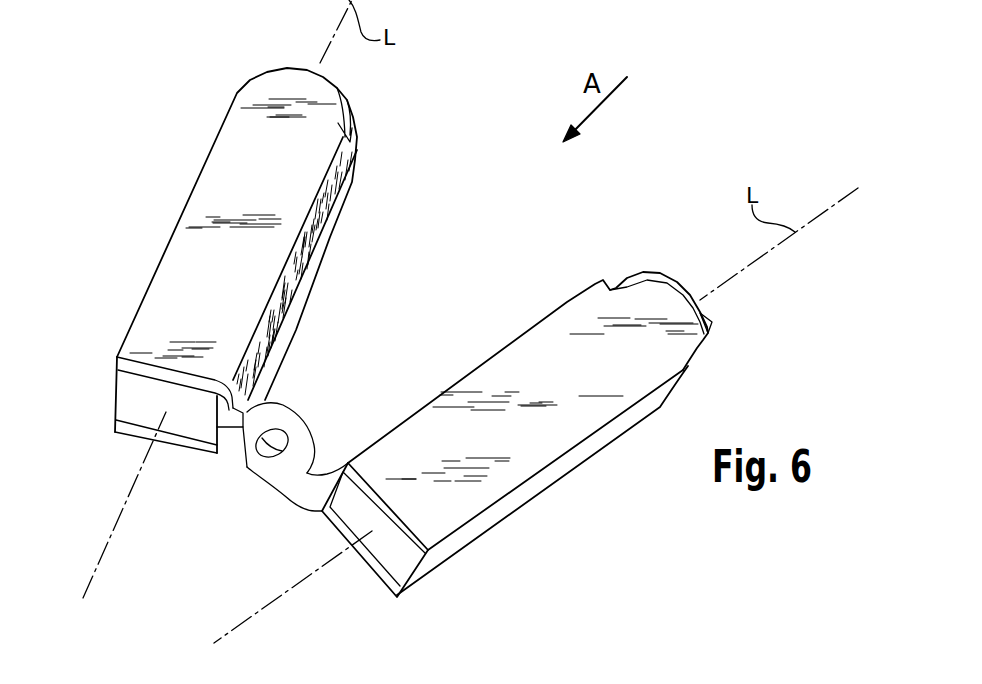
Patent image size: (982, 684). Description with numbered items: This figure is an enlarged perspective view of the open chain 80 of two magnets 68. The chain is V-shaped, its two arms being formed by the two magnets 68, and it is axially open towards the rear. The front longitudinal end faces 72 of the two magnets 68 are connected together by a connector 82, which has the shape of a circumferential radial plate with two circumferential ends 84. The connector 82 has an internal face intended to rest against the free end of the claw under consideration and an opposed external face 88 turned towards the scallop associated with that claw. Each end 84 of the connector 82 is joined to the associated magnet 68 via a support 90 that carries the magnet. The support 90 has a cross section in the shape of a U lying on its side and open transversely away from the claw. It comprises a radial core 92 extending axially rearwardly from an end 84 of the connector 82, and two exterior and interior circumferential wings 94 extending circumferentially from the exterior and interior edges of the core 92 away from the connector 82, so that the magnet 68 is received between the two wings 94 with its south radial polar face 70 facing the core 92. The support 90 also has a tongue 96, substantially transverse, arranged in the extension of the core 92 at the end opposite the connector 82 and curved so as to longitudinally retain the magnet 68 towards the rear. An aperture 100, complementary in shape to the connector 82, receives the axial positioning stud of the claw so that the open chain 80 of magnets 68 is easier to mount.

The magnet 68 is at (108, 404).
The south radial polar face 70 is at (115, 385).
The front longitudinal end face 72 is at (142, 412).
The open chain 80 is at (692, 149).
The connector 82 is at (296, 506).
The circumferential end 84 is at (247, 408).
The external face 88 is at (284, 482).
The support 90 is at (331, 237).
The radial core 92 is at (302, 289).
The circumferential wing 94 is at (177, 290).
The tongue 96 is at (352, 106).
The aperture 100 is at (260, 457).